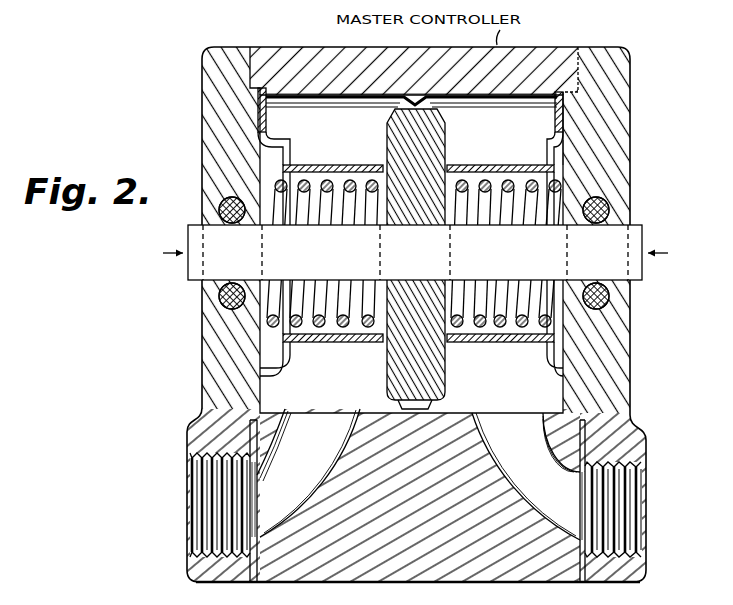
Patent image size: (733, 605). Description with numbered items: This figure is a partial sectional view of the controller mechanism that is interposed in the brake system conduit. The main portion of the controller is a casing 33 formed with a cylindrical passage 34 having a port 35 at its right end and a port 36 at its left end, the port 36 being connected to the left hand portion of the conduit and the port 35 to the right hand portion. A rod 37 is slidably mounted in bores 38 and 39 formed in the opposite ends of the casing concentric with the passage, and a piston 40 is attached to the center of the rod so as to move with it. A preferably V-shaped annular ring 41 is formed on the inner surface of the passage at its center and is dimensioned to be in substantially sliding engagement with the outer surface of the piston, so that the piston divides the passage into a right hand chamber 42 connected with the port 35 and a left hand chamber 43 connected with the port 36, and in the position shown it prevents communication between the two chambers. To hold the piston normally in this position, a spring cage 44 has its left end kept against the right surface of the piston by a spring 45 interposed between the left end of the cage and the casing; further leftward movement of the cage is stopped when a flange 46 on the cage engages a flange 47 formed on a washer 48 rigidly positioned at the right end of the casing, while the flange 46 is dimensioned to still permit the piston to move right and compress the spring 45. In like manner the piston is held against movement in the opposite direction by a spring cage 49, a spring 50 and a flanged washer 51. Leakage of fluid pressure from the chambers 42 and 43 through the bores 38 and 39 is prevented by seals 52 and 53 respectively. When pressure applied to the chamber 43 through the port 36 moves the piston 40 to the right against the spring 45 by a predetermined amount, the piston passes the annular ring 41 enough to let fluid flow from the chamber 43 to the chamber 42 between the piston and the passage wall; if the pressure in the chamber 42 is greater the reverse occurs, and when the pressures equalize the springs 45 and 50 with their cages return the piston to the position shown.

The casing 33 is at (566, 58).
The cylindrical passage 34 is at (518, 98).
The port 35 is at (640, 517).
The port 36 is at (195, 506).
The rod 37 is at (647, 238).
The bore 38 is at (618, 226).
The bore 39 is at (207, 226).
The piston 40 is at (444, 137).
The V-shaped annular ring 41 is at (420, 100).
The right hand chamber 42 is at (545, 118).
The left hand chamber 43 is at (290, 96).
The spring cage 44 is at (488, 150).
The spring 45 is at (533, 217).
The flange 46 is at (545, 160).
The flange 47 is at (535, 144).
The washer 48 is at (566, 125).
The spring cage 49 is at (330, 152).
The spring 50 is at (332, 213).
The flanged washer 51 is at (290, 140).
The seal 52 is at (609, 299).
The seal 53 is at (221, 301).